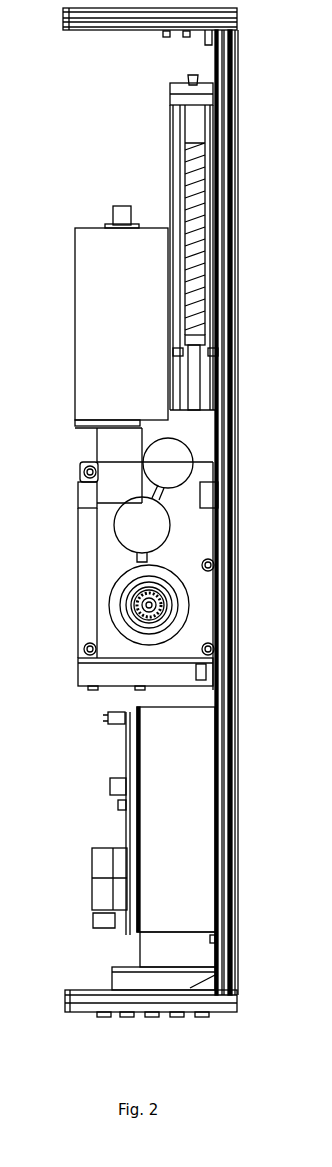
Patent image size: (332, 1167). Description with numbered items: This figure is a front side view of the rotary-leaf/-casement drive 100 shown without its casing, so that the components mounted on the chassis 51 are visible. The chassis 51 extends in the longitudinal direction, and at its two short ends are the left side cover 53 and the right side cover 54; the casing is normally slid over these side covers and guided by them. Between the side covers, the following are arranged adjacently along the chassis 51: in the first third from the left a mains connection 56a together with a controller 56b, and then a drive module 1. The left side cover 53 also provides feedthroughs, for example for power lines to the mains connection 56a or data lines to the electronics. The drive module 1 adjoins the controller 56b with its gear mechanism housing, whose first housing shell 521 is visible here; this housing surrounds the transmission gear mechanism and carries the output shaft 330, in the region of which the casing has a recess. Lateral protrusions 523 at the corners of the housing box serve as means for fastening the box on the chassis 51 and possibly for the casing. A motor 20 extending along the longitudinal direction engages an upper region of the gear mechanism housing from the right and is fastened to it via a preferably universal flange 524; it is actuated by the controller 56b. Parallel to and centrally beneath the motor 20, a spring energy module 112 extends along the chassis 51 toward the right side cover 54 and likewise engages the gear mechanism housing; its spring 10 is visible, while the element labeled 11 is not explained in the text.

The drive module 1 is at (55, 449).
The spring 10 is at (226, 235).
The spring mount 11 is at (192, 82).
The motor 20 is at (113, 310).
The chassis 51 is at (225, 283).
The left side cover 53 is at (65, 999).
The right side cover 54 is at (75, 17).
The mains connection 56a is at (168, 967).
The controller 56b is at (162, 823).
The rotary-leaf/-casement drive 100 is at (66, 885).
The spring energy module 112 is at (150, 188).
The output shaft 330 is at (152, 600).
The first housing shell 521 is at (188, 618).
The lateral protrusions 523 is at (210, 494).
The flange 524 is at (78, 418).